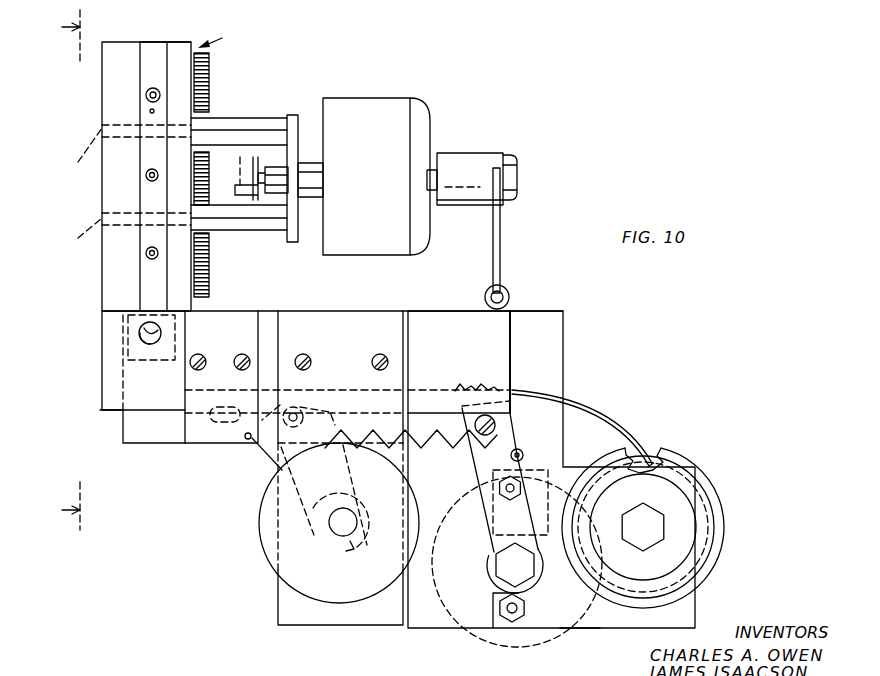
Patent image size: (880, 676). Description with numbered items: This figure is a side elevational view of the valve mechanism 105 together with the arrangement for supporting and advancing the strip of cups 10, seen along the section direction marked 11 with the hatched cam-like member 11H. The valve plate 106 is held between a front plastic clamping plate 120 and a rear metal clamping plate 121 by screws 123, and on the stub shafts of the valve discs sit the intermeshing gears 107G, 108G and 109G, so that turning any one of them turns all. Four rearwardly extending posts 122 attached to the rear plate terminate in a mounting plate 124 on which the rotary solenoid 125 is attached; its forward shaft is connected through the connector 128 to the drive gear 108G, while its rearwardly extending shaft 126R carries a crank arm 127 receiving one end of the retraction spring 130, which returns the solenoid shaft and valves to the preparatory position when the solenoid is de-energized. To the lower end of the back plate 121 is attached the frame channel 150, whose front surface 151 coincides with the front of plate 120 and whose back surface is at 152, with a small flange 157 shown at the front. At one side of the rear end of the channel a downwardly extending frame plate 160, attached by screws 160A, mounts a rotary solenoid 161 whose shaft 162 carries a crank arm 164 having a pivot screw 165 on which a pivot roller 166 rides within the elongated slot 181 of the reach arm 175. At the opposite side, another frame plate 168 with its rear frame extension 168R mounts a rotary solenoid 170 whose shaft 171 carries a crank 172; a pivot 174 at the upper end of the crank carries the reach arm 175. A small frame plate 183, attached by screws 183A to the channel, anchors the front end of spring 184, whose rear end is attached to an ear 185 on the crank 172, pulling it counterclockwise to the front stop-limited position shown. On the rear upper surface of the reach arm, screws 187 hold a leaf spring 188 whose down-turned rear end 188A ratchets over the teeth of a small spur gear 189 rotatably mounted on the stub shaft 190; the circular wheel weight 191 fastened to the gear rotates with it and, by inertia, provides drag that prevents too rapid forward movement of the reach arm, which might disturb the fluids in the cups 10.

The cup 10 is at (178, 330).
The section line 11 is at (85, 270).
The cam 11H is at (142, 372).
The valve mechanism 105 is at (226, 35).
The valve plate 106 is at (153, 52).
The gear 107G is at (210, 288).
The drive gear 108G is at (207, 175).
The gear 109G is at (210, 70).
The front plastic clamping plate 120 is at (133, 87).
The rear metal clamping plate 121 is at (190, 77).
The posts 122 is at (258, 126).
The screws 123 is at (125, 189).
The mounting plate 124 is at (295, 120).
The rotary solenoid 125 is at (377, 189).
The rearwardly extending shaft 126R is at (440, 178).
The crank arm 127 is at (501, 240).
The connector 128 is at (262, 192).
The spring 130 is at (509, 295).
The frame channel 150 is at (438, 326).
The front surface 151 is at (102, 388).
The back surface 152 is at (512, 354).
The flange 157 is at (110, 413).
The frame plate 160 is at (287, 606).
The screws 160A is at (377, 356).
The rotary solenoid 161 is at (286, 546).
The shaft 162 is at (340, 523).
The crank arm 164 is at (292, 485).
The pivot screw 165 is at (264, 448).
The pivot roller 166 is at (305, 402).
The frame plate 168 is at (557, 383).
The rear frame extension 168R is at (577, 628).
The rotary solenoid 170 is at (470, 643).
The shaft 171 is at (500, 573).
The crank 172 is at (490, 522).
The pivot 174 is at (467, 421).
The reach arm 175 is at (158, 429).
The elongated slot 181 is at (226, 432).
The frame plate 183 is at (193, 434).
The screws 183A is at (246, 358).
The spring 184 is at (455, 455).
The ear 185 is at (523, 451).
The screws 187 is at (470, 384).
The leaf spring 188 is at (585, 412).
The down-turned rear end 188A is at (655, 462).
The spur gear 189 is at (666, 454).
The stub shaft 190 is at (655, 523).
The wheel weight 191 is at (724, 513).